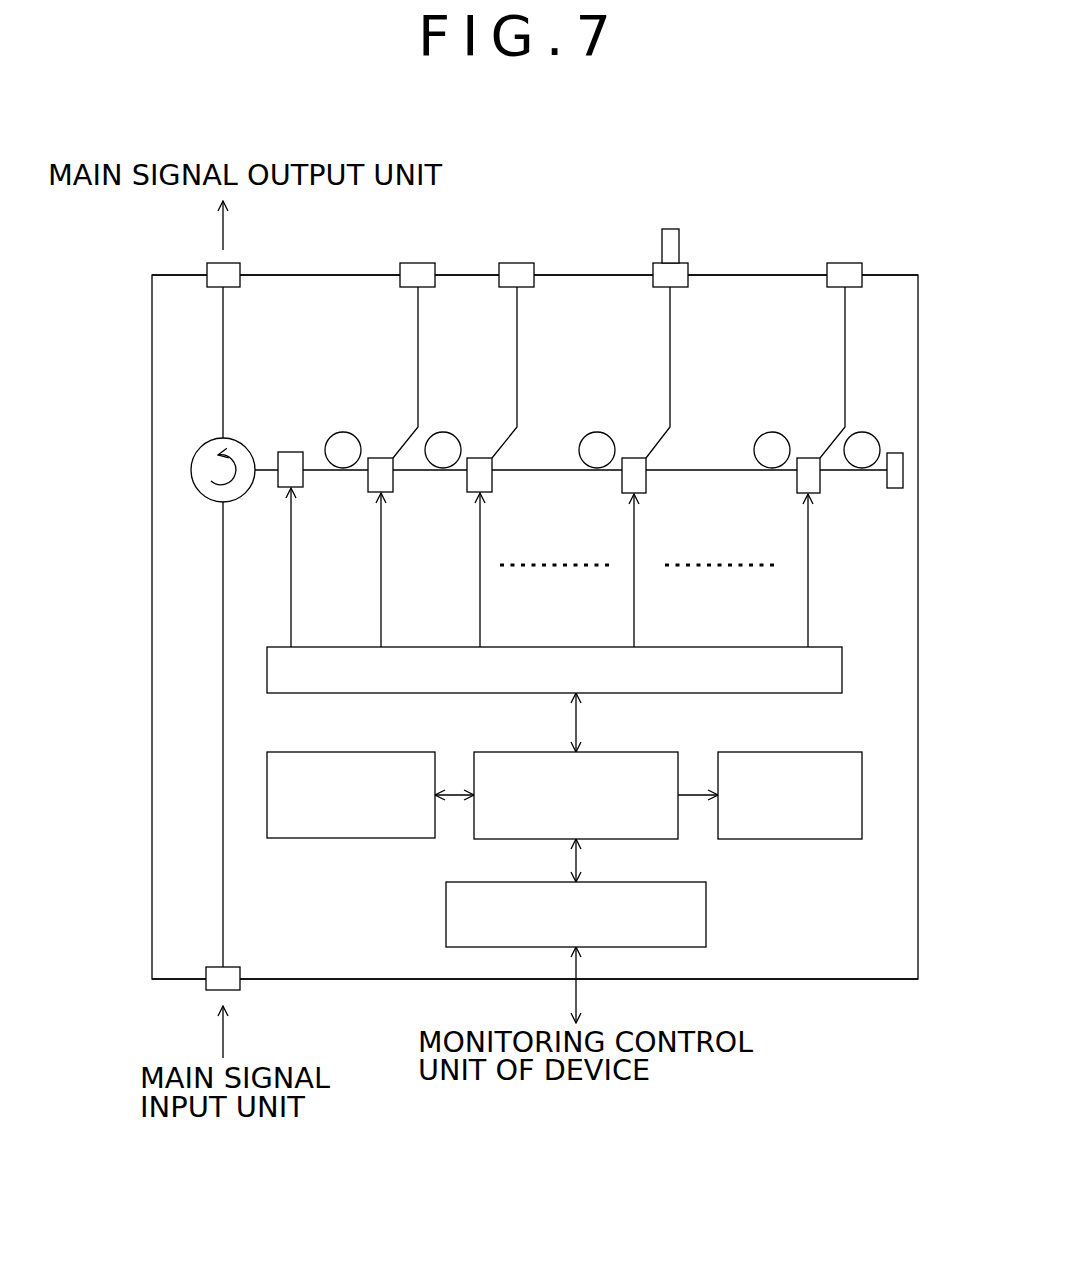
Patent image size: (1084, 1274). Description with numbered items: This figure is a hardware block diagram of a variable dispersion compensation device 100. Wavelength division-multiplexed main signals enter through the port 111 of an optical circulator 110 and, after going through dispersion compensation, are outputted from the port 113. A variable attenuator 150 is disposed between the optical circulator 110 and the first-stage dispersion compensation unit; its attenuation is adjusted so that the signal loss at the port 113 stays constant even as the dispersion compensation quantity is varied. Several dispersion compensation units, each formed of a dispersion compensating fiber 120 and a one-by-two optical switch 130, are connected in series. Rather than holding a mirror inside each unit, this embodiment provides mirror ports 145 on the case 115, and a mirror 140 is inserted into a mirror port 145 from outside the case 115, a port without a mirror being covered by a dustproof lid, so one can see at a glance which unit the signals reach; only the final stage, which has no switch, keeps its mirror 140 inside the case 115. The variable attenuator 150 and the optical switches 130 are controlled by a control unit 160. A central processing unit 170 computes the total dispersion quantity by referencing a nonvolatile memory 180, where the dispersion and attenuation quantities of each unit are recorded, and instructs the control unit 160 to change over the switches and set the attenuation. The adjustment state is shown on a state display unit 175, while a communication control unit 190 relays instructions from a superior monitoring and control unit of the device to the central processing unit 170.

The optical device 100 is at (907, 222).
The optical circulator 110 is at (202, 495).
The port 111 is at (240, 967).
The port 113 is at (238, 287).
The case 115 is at (885, 979).
The dispersion compensating fiber 120 is at (352, 433).
The 1×2 optical switch 130 is at (368, 488).
The mirror 140 is at (679, 238).
The mirror port 145 is at (432, 287).
The variable attenuator 150 is at (291, 452).
The control unit 160 is at (560, 647).
The central processing unit 170 is at (635, 752).
The state display unit 175 is at (790, 752).
The nonvolatile memory 180 is at (352, 752).
The communication control unit 190 is at (706, 903).